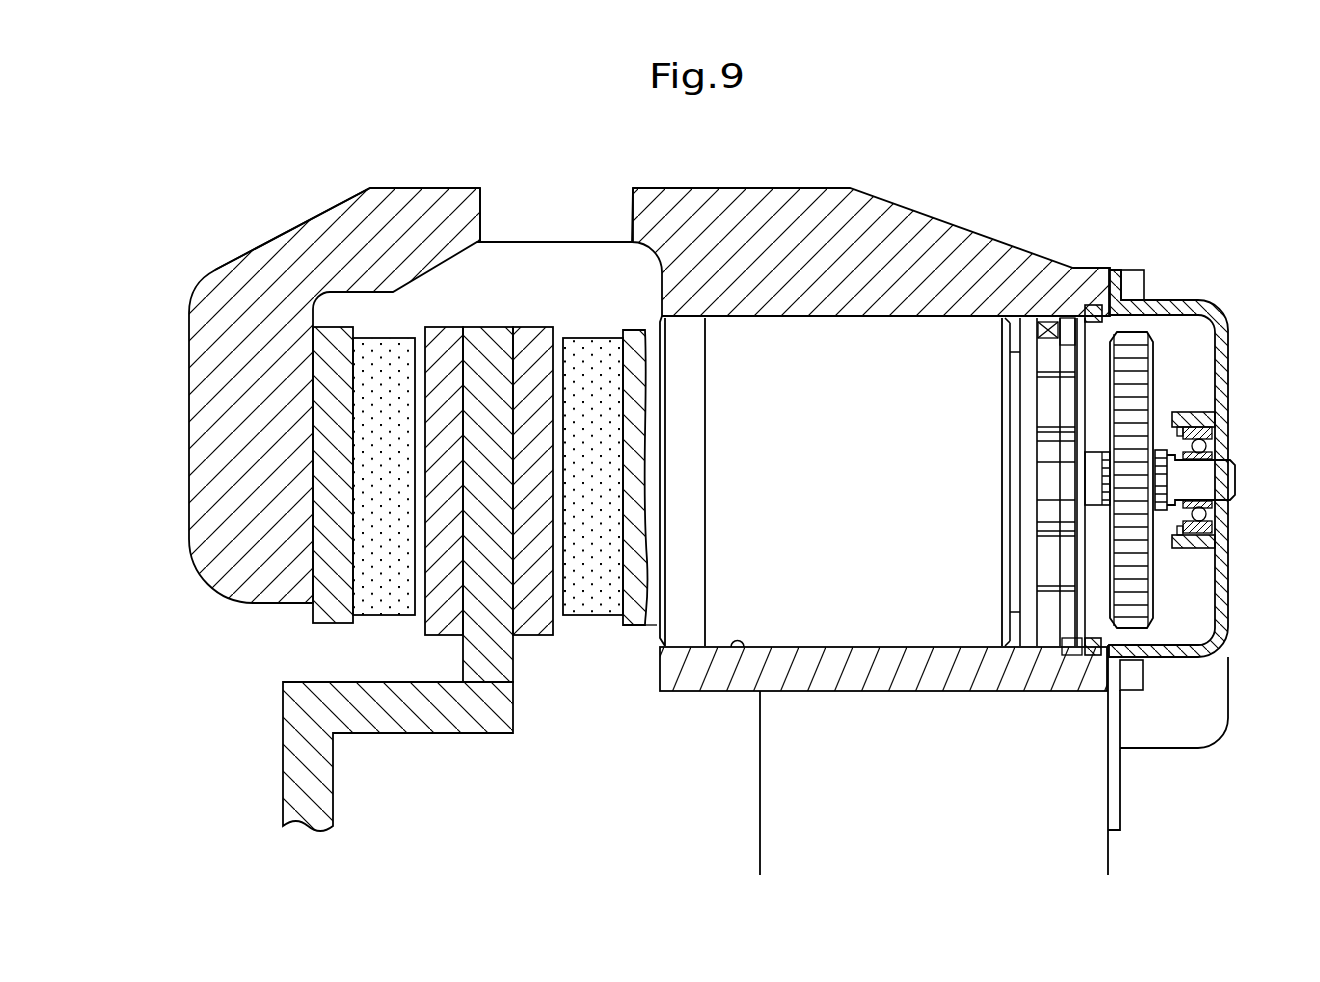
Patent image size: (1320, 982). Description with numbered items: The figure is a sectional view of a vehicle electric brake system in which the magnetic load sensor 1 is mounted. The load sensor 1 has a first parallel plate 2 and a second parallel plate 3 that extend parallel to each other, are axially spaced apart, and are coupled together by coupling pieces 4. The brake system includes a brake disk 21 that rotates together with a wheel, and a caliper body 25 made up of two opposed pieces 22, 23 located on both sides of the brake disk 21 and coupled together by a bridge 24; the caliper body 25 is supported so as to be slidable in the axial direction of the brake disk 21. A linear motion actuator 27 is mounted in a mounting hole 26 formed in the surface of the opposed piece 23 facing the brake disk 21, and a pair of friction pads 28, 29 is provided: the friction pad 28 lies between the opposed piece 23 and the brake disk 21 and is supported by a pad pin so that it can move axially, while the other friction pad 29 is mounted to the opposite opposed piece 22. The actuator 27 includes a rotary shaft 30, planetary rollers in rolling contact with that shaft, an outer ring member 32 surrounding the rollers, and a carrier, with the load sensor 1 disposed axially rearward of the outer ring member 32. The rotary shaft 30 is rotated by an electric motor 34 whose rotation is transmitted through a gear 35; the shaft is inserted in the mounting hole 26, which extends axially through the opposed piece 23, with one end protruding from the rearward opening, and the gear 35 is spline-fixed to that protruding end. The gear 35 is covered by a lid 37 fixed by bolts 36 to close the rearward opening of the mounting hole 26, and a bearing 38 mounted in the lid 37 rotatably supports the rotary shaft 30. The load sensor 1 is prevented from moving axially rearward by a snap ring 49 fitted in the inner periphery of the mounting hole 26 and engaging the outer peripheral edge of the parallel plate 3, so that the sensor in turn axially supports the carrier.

The load sensor 1 is at (1090, 362).
The first parallel plate 2 is at (1027, 328).
The second parallel plate 3 is at (1080, 318).
The coupling pieces 4 is at (1058, 387).
The brake disk 21 is at (488, 337).
The opposed piece 22 is at (205, 405).
The opposed piece 23 is at (680, 683).
The bridge 24 is at (420, 186).
The caliper body 25 is at (258, 243).
The mounting hole 26 is at (733, 647).
The linear motion actuator 27 is at (738, 310).
The friction pad 28 is at (592, 600).
The friction pad 29 is at (380, 610).
The rotary shaft 30 is at (1218, 478).
The outer ring member 32 is at (800, 330).
The electric motor 34 is at (1098, 786).
The gear 35 is at (1153, 578).
The bolts 36 is at (1135, 286).
The lid 37 is at (1230, 538).
The bearing 38 is at (1207, 423).
The snap ring 49 is at (1092, 310).